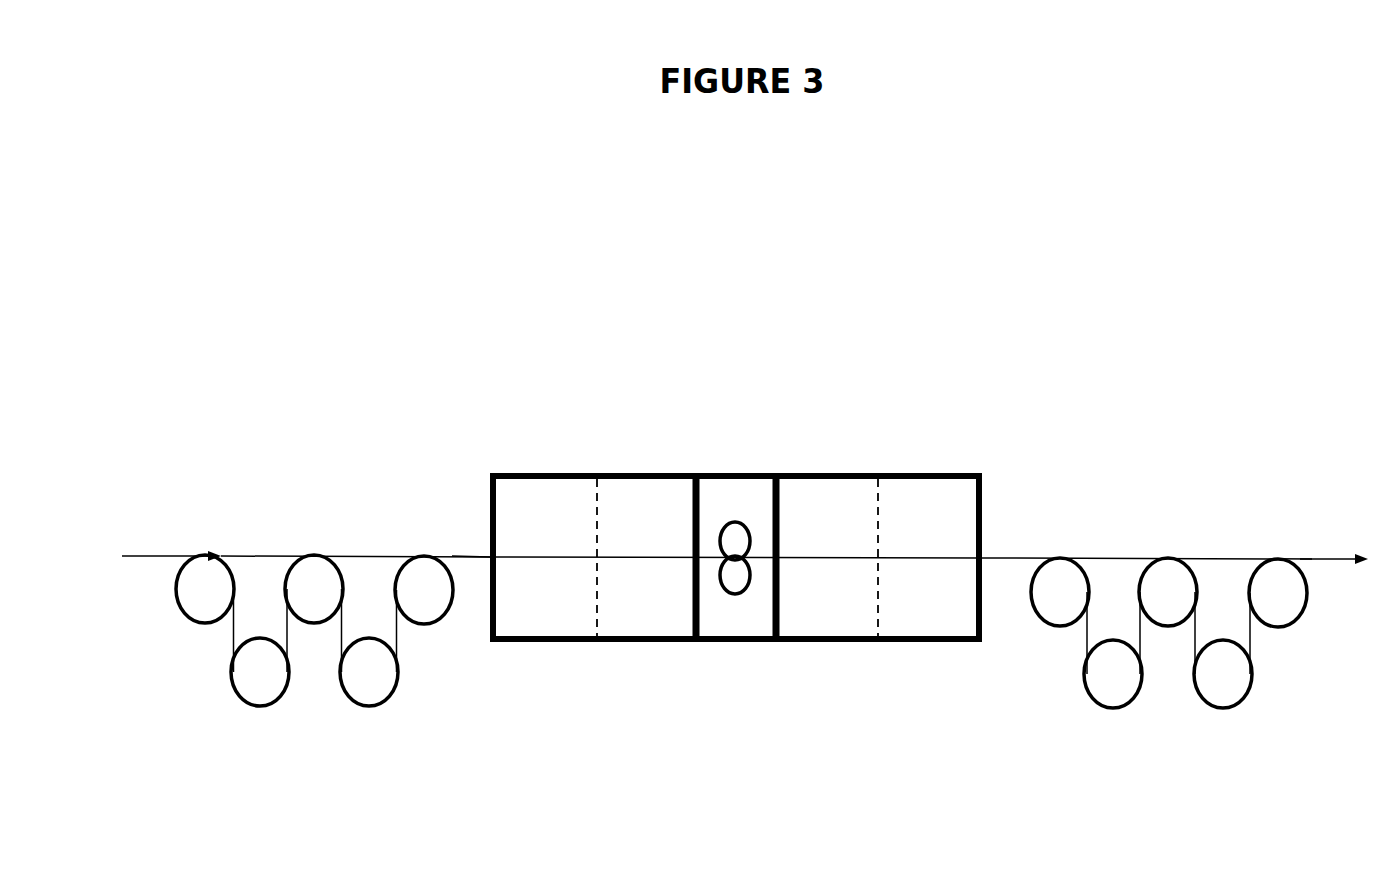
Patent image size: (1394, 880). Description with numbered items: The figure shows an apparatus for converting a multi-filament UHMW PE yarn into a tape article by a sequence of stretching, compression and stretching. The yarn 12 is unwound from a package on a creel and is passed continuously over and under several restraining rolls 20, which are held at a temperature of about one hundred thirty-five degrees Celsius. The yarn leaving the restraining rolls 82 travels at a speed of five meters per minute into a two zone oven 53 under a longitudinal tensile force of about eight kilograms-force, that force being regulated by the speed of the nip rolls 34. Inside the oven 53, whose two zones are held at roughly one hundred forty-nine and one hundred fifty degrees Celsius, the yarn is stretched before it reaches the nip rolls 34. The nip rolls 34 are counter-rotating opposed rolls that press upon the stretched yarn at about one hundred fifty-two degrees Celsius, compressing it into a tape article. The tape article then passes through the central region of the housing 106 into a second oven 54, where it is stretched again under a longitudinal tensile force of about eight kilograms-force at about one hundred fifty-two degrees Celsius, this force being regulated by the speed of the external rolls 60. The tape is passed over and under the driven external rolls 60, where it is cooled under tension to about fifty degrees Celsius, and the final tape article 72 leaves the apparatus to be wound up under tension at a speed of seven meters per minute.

The yarn 12 is at (154, 553).
The restraining rolls 20 is at (397, 570).
The yarn leaving the restraining rolls 82 is at (462, 554).
The two zone oven 53 is at (622, 473).
The second oven 54 is at (843, 473).
The fiber tow passing through chamber 106 is at (900, 558).
The nip rolls 34 is at (733, 595).
The external rolls 60 is at (1270, 560).
The final tape article 72 is at (1325, 557).